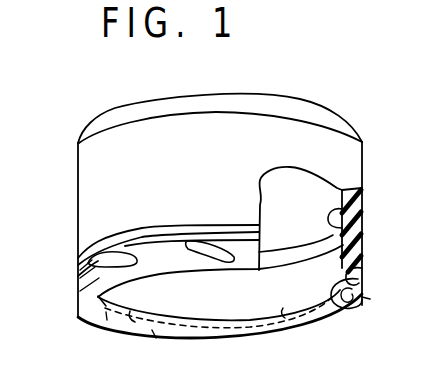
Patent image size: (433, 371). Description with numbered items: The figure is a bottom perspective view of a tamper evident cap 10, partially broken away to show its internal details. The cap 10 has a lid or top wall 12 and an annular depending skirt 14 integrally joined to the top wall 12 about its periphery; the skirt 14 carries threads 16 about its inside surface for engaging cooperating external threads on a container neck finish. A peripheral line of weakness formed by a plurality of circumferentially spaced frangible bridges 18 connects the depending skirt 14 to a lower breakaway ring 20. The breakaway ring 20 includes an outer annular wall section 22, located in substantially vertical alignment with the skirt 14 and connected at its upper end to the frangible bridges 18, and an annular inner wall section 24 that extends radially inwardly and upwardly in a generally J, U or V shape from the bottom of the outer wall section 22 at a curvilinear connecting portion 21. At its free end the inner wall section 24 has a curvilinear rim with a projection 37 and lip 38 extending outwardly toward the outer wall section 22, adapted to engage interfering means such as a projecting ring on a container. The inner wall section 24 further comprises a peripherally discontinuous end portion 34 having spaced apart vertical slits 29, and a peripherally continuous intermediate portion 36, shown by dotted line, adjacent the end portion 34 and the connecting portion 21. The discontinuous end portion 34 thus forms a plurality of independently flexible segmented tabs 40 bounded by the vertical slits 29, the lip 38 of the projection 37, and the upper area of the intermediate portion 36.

The cap 10 is at (365, 196).
The top wall 12 is at (269, 95).
The depending skirt 14 is at (78, 172).
The threads 16 is at (362, 215).
The frangible bridges 18 is at (110, 260).
The breakaway ring 20 is at (70, 305).
The curvilinear connecting portion 21 is at (318, 338).
The outer annular wall section 22 is at (80, 291).
The inner wall section 24 is at (104, 308).
The vertical slits 29 is at (233, 308).
The peripherally discontinuous end portion 34 is at (136, 320).
The peripherally continuous intermediate portion 36 is at (160, 335).
The projection 37 is at (363, 273).
The lip 38 is at (364, 293).
The segmented tabs 40 is at (284, 316).